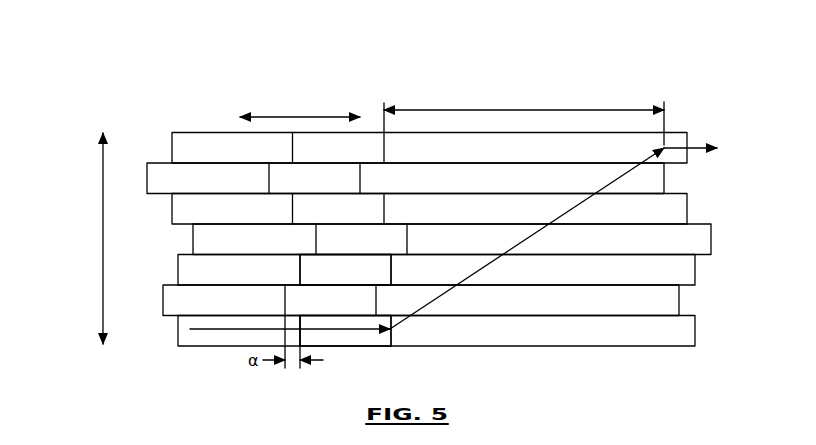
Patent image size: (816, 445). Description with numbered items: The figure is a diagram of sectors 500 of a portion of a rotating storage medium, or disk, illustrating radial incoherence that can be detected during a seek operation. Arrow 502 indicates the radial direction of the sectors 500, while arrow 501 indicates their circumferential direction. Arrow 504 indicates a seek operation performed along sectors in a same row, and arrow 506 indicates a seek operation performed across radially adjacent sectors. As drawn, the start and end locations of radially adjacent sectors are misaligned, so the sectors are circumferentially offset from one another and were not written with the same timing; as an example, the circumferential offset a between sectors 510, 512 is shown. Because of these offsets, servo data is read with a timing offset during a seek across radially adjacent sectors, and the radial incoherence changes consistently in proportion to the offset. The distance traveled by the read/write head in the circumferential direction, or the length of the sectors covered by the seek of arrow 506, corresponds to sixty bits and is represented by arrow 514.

The sectors 500 is at (208, 132).
The arrow indicating circumferential direction 501 is at (308, 117).
The arrow indicating radial direction 502 is at (103, 214).
The arrow indicating seek operation along same row 504 is at (368, 332).
The arrow indicating seek operation across radially adjacent sectors 506 is at (525, 239).
The sector 510 is at (331, 284).
The sector 512 is at (347, 346).
The arrow representing distance or length 514 is at (507, 110).